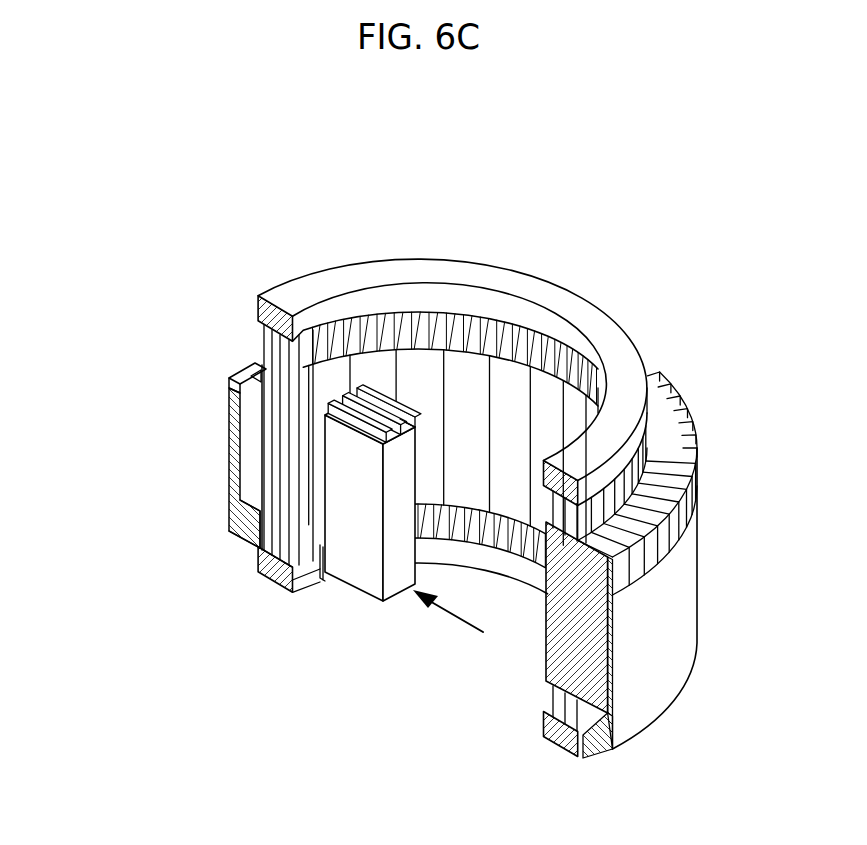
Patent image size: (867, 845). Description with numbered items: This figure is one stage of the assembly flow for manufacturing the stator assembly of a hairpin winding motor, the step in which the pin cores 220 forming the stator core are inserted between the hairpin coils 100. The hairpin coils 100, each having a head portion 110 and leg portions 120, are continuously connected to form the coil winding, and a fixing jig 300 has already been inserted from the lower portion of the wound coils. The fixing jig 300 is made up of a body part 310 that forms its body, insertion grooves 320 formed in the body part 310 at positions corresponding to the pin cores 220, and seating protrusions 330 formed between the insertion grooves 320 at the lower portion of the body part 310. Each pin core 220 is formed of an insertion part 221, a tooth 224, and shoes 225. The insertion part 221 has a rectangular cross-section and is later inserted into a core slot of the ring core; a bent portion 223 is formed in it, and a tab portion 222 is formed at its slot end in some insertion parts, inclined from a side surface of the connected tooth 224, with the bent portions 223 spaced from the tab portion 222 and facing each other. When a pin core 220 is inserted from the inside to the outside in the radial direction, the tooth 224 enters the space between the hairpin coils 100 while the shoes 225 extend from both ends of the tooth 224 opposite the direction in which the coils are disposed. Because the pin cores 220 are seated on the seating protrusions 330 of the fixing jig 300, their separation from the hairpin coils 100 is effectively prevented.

The hairpin coil 100 is at (425, 196).
The head portion 110 is at (340, 264).
The leg portion 120 is at (405, 332).
The pin core 220 is at (393, 614).
The insertion part 221 is at (330, 412).
The tab portion 222 is at (312, 586).
The bent portion 223 is at (333, 580).
The tooth 224 is at (363, 428).
The shoe 225 is at (405, 420).
The fixing jig 300 is at (133, 446).
The body part 310 is at (250, 360).
The insertion groove 320 is at (248, 400).
The seating protrusion 330 is at (250, 493).